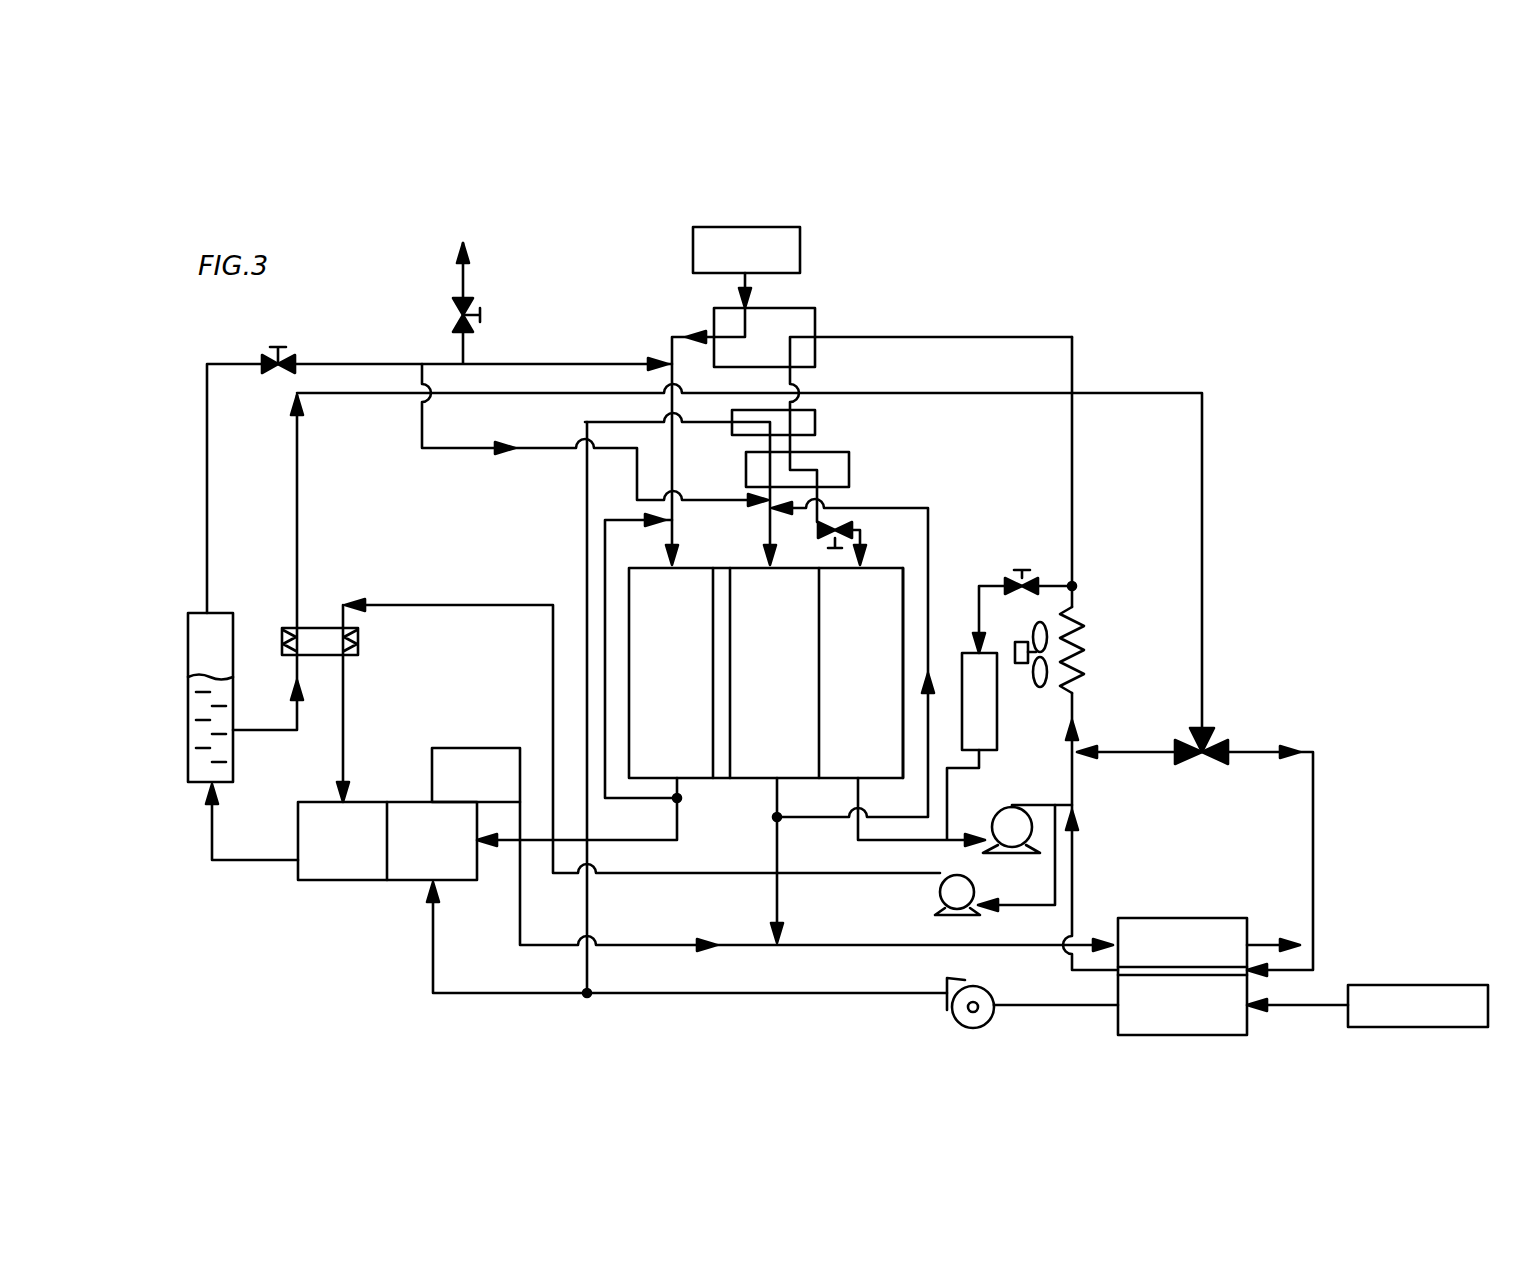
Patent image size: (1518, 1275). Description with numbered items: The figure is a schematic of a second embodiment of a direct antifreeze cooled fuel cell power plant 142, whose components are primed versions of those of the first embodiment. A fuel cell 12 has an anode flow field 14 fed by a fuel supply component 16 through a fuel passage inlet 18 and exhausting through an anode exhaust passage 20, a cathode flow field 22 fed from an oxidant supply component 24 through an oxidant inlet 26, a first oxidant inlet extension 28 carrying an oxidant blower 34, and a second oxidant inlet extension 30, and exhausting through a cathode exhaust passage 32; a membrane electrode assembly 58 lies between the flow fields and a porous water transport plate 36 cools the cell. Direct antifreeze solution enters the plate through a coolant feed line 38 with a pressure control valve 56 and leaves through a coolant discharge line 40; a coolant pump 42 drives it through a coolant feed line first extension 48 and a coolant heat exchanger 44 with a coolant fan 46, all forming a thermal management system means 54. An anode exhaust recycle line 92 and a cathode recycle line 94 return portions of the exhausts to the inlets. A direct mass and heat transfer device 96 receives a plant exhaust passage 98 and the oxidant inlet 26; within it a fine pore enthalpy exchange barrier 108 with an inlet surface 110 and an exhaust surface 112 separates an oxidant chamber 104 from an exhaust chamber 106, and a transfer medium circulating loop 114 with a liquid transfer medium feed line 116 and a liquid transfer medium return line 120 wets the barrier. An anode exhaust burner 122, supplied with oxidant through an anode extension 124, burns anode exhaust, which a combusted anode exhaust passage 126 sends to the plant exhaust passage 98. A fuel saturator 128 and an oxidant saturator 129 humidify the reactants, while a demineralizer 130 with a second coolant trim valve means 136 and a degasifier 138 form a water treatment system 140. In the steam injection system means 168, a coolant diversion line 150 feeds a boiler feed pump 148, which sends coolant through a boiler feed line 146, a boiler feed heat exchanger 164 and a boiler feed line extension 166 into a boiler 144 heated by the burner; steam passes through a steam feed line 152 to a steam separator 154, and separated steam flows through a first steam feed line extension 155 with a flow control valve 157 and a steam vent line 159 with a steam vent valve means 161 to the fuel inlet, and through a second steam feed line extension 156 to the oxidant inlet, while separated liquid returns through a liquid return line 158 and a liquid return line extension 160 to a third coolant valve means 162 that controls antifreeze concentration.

The fuel cell 12 is at (698, 482).
The anode flow field 14 is at (693, 680).
The fuel supply component 16 is at (800, 268).
The fuel passage inlet 18 is at (690, 335).
The anode exhaust passage 20 is at (680, 820).
The cathode flow field 22 is at (797, 680).
The oxidant supply component 24 is at (1435, 983).
The oxidant inlet 26 is at (1318, 1000).
The first oxidant inlet extension 28 is at (1075, 1007).
The second oxidant inlet extension 30 is at (585, 545).
The cathode exhaust passage 32 is at (779, 865).
The oxidant blower 34 is at (965, 1020).
The porous water transport plate 36 is at (882, 680).
The coolant feed line 38 is at (858, 550).
The coolant discharge line 40 is at (915, 842).
The coolant pump 42 is at (995, 812).
The coolant heat exchanger 44 is at (1075, 645).
The coolant fan 46 is at (1040, 624).
The coolant feed line first extension 48 is at (1078, 740).
The thermal management system means 54 is at (1056, 784).
The pressure control valve 56 is at (705, 490).
The membrane electrode assembly 58 is at (722, 578).
The anode exhaust recycle line 92 is at (612, 805).
The cathode recycle line 94 is at (922, 818).
The direct mass and heat transfer device 96 is at (1198, 898).
The plant exhaust passage 98 is at (880, 945).
The oxidant chamber 104 is at (1240, 1030).
The exhaust chamber 106 is at (1145, 930).
The fine pore enthalpy exchange barrier 108 is at (1195, 970).
The inlet surface 110 is at (1140, 977).
The exhaust surface 112 is at (1165, 965).
The transfer medium circulating loop 114 is at (1285, 828).
The liquid transfer medium feed line 116 is at (1275, 750).
The liquid transfer medium return line 120 is at (1075, 855).
The anode exhaust burner 122 is at (475, 785).
The anode extension of the oxidant inlet 124 is at (432, 950).
The combusted anode exhaust passage 126 is at (520, 922).
The fuel saturator 128 is at (800, 318).
The oxidant saturator 129 is at (808, 428).
The demineralizer 130 is at (948, 640).
The second coolant trim valve means 136 is at (1022, 572).
The degasifier 138 is at (843, 462).
The water treatment system 140 is at (988, 520).
The direct antifreeze cooled fuel cell power plant 142 is at (1342, 311).
The boiler 144 is at (330, 872).
The boiler feed line 146 is at (455, 607).
The boiler feed pump 148 is at (965, 893).
The coolant diversion line 150 is at (1040, 908).
The steam feed line 152 is at (255, 822).
The steam separator 154 is at (215, 625).
The first steam feed line extension 155 is at (207, 410).
The second steam feed line extension 156 is at (548, 452).
The flow control valve 157 is at (262, 360).
The liquid return line 158 is at (297, 715).
The steam vent line 159 is at (463, 358).
The liquid return line extension 160 is at (385, 398).
The steam vent valve means 161 is at (455, 300).
The third coolant valve means 162 is at (1215, 745).
The boiler feed heat exchanger 164 is at (318, 613).
The boiler feed line extension 166 is at (345, 705).
The steam injection system means 168 is at (436, 514).